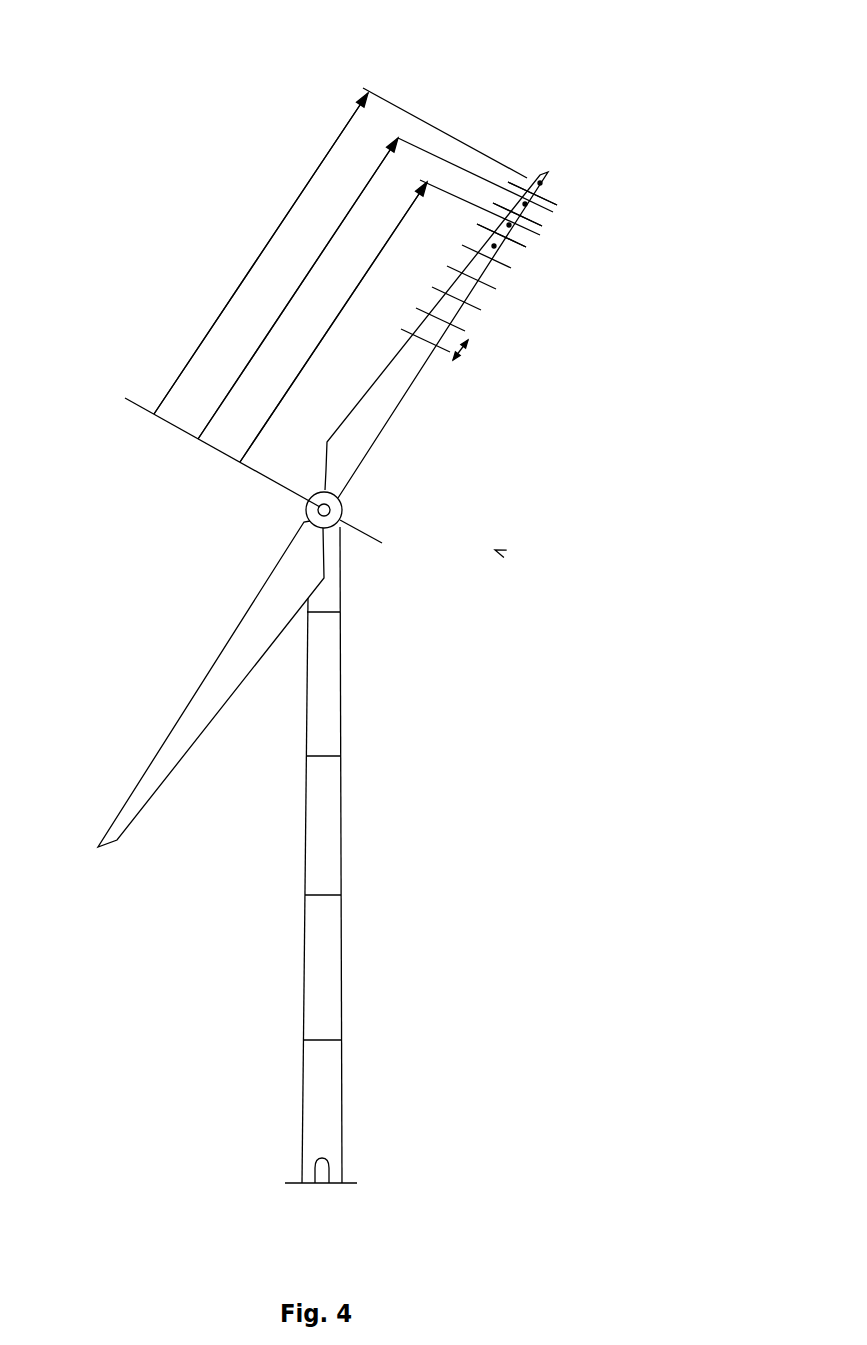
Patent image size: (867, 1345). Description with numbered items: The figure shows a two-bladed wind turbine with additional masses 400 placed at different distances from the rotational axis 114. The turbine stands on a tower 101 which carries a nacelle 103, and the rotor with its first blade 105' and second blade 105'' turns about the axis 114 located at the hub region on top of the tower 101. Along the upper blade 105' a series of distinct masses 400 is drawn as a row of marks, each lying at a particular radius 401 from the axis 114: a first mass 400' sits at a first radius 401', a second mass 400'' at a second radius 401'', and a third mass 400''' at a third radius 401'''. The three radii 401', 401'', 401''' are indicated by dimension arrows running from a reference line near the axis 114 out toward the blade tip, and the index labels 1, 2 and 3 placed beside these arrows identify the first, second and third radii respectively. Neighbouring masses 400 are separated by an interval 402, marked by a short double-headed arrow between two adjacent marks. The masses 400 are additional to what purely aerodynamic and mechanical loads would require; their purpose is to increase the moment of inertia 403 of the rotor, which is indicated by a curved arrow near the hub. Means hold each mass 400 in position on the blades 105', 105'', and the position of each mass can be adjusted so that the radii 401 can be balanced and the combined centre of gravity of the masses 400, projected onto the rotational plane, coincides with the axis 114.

The tower 101 is at (322, 803).
The nacelle 103 is at (98, 634).
The first blade 105' is at (436, 335).
The second blade 105'' is at (211, 700).
The axis 114 is at (334, 494).
The masses 400 is at (541, 206).
The first mass 400' is at (607, 197).
The second mass 400'' is at (593, 245).
The third mass 400''' is at (577, 292).
The radii 401 is at (339, 263).
The first radius 401' is at (261, 253).
The second radius 401'' is at (298, 288).
The third radius 401''' is at (333, 322).
The interval D 402 is at (473, 362).
The moment of inertia 403 is at (497, 551).
The first radial index 1 is at (261, 253).
The second radial index 2 is at (298, 288).
The third radial index 3 is at (333, 322).